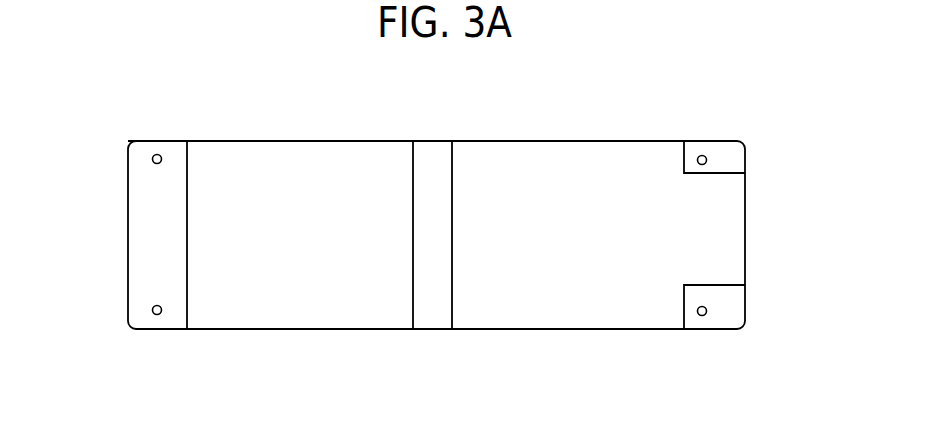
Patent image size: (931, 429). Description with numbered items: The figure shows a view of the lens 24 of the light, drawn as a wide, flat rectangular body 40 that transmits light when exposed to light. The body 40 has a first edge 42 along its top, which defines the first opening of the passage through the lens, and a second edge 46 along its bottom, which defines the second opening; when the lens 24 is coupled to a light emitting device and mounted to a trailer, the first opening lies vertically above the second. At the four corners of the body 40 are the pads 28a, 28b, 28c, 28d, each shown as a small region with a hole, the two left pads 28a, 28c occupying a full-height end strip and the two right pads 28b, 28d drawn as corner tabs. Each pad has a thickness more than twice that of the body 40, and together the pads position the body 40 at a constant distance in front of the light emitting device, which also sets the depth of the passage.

The lens 24 is at (124, 108).
The body 40 is at (543, 140).
The first edge 42 is at (283, 139).
The second edge 46 is at (283, 331).
The pad 28a is at (130, 157).
The pad 28b is at (740, 155).
The pad 28c is at (130, 302).
The pad 28d is at (738, 302).